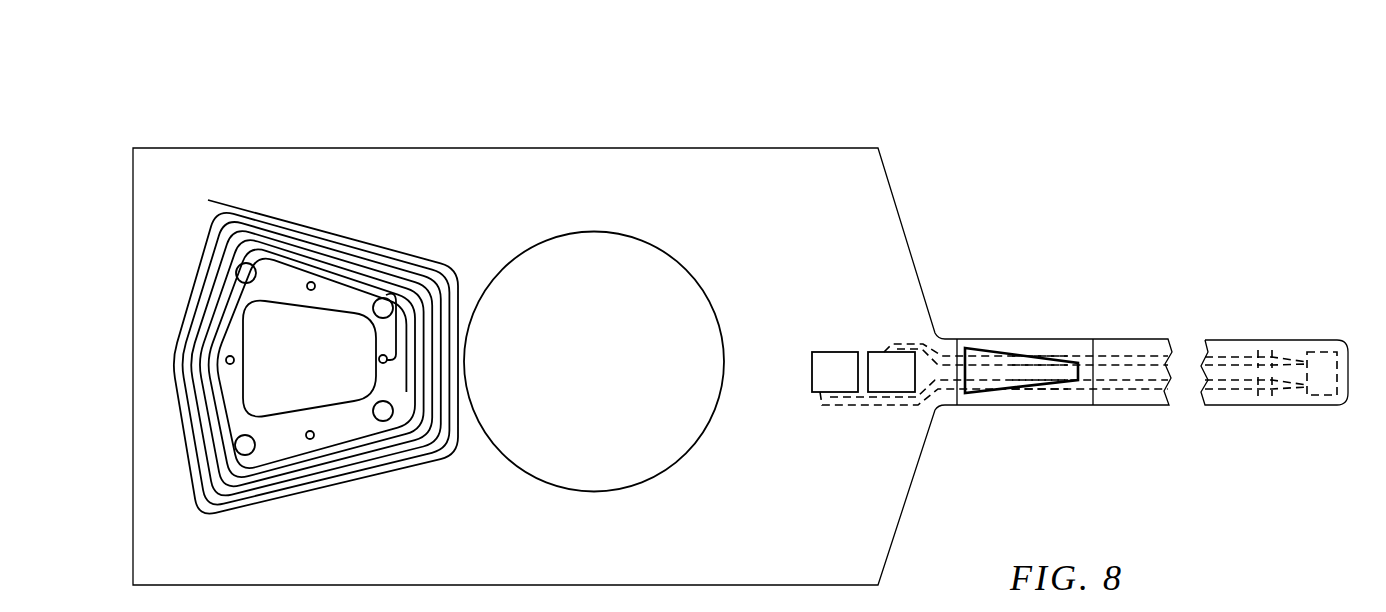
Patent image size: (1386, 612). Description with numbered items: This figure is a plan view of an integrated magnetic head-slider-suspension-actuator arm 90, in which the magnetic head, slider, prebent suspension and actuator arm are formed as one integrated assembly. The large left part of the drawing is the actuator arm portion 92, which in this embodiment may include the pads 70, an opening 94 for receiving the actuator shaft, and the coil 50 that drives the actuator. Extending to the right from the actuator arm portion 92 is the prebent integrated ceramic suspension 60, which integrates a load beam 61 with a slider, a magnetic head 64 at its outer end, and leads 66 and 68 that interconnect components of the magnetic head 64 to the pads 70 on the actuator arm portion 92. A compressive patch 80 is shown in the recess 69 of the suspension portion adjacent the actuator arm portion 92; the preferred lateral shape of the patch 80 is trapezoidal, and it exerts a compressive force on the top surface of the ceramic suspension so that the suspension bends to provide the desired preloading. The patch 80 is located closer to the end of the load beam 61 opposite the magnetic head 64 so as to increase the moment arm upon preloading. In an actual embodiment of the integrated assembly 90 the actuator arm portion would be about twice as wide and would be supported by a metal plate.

The coil 50 is at (315, 226).
The prebent integrated ceramic suspension 60 is at (1205, 200).
The load beam 61 is at (1133, 407).
The magnetic head 64 is at (1328, 352).
The lead 66 is at (1122, 360).
The lead 68 is at (1228, 390).
The recess 69 is at (1035, 397).
The pads 70 is at (833, 358).
The compressive patch 80 is at (1047, 345).
The integrated magnetic head-slider-suspension-actuator arm 90 is at (992, 118).
The actuator arm portion 92 is at (575, 140).
The opening 94 is at (585, 250).